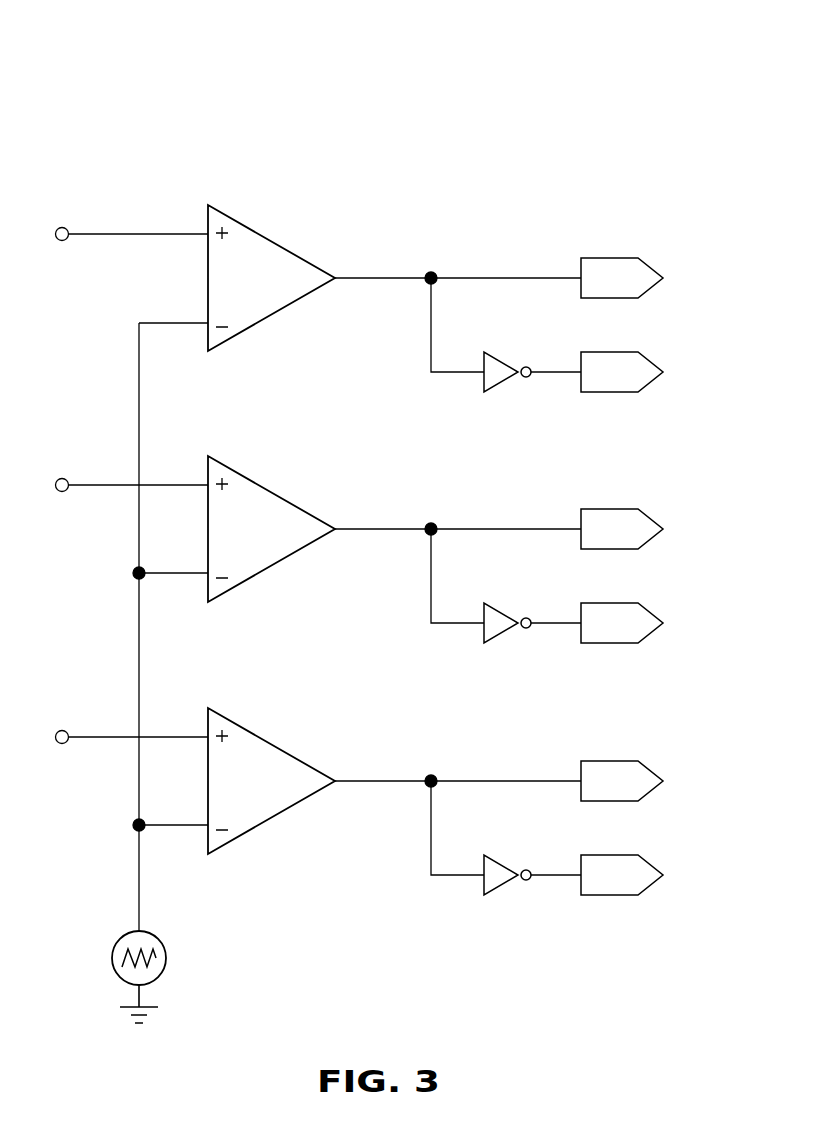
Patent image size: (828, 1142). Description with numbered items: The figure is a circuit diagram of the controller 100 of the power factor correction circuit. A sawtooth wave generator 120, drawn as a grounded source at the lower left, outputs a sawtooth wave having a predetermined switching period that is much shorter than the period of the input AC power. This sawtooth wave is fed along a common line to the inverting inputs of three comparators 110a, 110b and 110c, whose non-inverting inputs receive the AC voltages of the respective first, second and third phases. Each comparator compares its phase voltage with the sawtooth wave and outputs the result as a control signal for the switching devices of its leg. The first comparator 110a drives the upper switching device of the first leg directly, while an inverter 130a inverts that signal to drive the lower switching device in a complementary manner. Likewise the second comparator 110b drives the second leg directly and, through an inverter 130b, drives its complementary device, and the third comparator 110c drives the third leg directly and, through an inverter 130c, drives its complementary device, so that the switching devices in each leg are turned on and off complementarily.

The controller 100 is at (378, 101).
The first comparator 110a is at (270, 238).
The second comparator 110b is at (270, 489).
The third comparator 110c is at (270, 741).
The sawtooth wave generator 120 is at (166, 957).
The inverter 130a is at (503, 382).
The inverter 130b is at (503, 633).
The inverter 130c is at (503, 885).